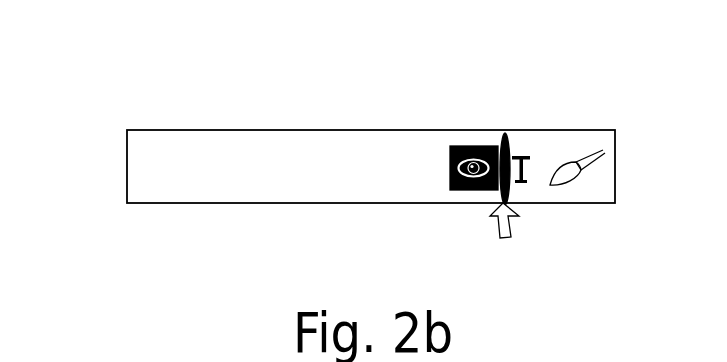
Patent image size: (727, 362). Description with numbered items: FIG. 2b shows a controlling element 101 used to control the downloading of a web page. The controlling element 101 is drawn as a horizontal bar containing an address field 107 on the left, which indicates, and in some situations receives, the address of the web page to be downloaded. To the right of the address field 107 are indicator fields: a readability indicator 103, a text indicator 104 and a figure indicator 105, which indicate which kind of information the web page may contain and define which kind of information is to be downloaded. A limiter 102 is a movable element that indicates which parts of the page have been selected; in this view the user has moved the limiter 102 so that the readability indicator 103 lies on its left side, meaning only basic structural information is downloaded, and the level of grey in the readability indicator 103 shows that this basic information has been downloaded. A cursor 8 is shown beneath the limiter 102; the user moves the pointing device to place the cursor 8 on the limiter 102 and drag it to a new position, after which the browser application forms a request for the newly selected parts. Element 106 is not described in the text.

The controlling element 101 is at (193, 130).
The limiter 102 is at (505, 130).
The readability indicator 103 is at (477, 130).
The text indicator 104 is at (525, 130).
The figure indicator 105 is at (587, 130).
The eye icon button 106 is at (460, 145).
The address field 107 is at (143, 187).
The cursor 8 is at (510, 218).